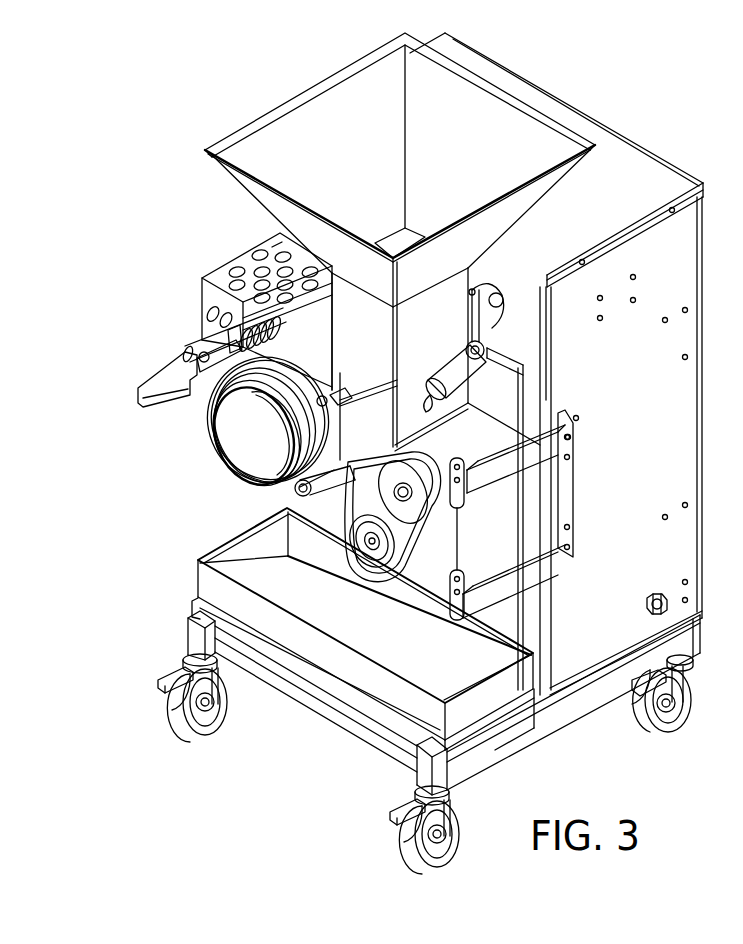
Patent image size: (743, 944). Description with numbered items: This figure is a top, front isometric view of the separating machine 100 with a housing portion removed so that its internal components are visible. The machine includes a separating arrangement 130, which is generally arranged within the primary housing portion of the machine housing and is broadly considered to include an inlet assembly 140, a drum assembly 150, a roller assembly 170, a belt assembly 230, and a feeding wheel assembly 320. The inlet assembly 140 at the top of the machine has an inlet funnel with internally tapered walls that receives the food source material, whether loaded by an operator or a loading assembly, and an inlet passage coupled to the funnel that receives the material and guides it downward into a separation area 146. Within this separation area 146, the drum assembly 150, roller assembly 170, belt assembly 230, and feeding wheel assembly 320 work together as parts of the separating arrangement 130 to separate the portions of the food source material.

The separating machine 100 is at (232, 73).
The inlet assembly 140 is at (232, 196).
The feeding wheel assembly 320 is at (348, 366).
The separating arrangement 130 is at (198, 451).
The drum assembly 150 is at (218, 466).
The separation area 146 is at (333, 456).
The belt assembly 230 is at (338, 510).
The roller assembly 170 is at (380, 590).